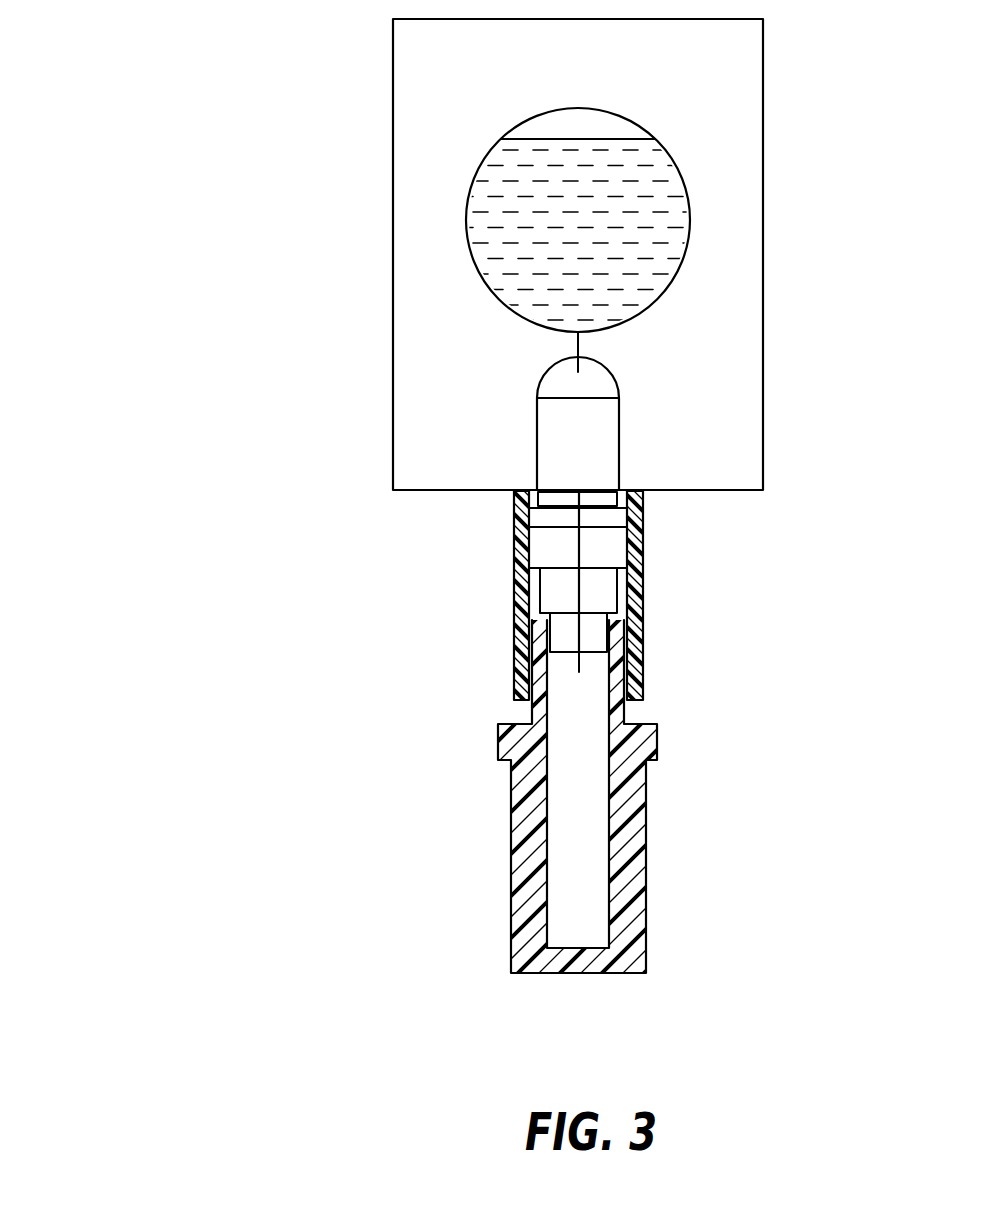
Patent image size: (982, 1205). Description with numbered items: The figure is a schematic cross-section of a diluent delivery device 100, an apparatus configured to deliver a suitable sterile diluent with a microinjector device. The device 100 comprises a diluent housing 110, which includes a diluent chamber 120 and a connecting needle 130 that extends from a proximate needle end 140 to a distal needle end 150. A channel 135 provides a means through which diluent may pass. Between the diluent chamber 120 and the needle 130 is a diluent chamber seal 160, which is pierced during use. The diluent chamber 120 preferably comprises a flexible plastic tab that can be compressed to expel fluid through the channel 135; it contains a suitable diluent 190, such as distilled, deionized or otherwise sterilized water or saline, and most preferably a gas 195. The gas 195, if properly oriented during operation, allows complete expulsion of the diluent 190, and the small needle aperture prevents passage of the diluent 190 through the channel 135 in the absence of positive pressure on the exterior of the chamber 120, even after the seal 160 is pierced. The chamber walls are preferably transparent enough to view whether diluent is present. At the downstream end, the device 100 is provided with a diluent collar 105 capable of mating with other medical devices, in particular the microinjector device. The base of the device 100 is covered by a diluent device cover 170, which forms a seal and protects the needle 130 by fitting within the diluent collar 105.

The diluent delivery device 100 is at (248, 526).
The diluent collar 105 is at (642, 650).
The diluent housing 110 is at (692, 368).
The diluent chamber 120 is at (698, 203).
The connecting needle 130 is at (596, 550).
The channel 135 is at (555, 442).
The proximate needle end 140 is at (578, 512).
The distal needle end 150 is at (578, 674).
The diluent chamber seal 160 is at (603, 498).
The diluent device cover 170 is at (653, 737).
The diluent 190 is at (603, 263).
The gas 195 is at (605, 130).